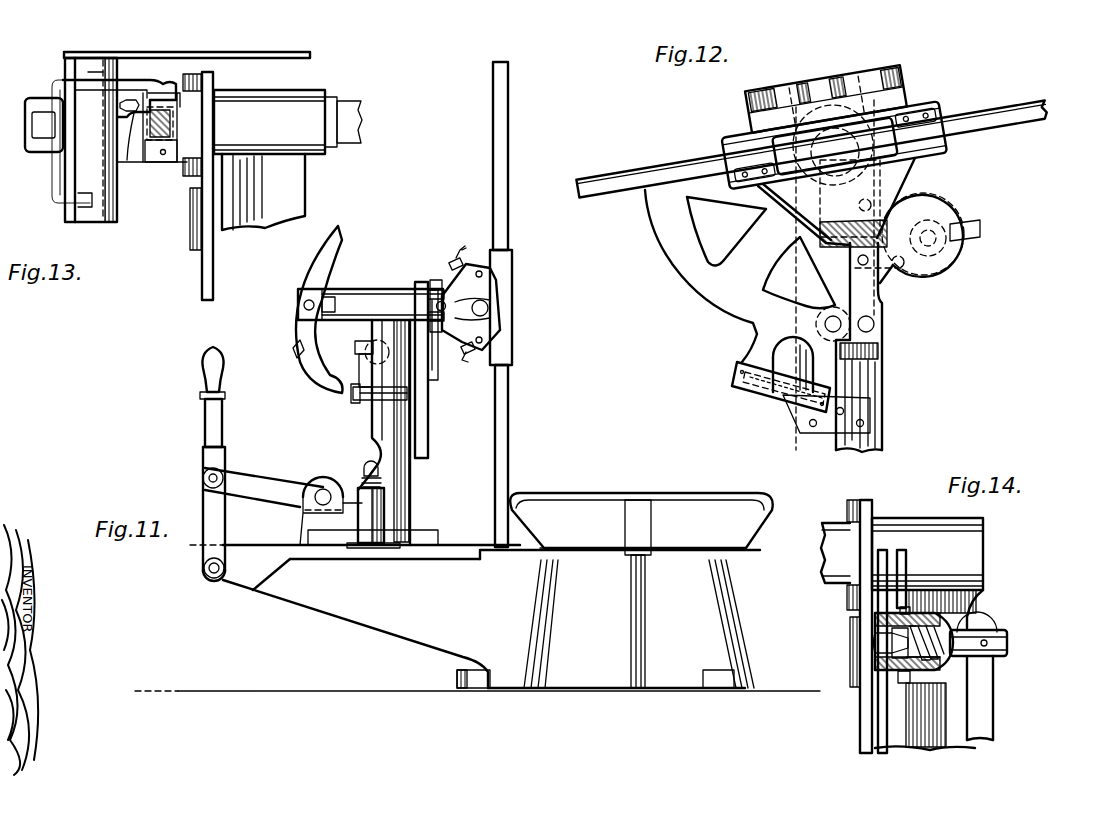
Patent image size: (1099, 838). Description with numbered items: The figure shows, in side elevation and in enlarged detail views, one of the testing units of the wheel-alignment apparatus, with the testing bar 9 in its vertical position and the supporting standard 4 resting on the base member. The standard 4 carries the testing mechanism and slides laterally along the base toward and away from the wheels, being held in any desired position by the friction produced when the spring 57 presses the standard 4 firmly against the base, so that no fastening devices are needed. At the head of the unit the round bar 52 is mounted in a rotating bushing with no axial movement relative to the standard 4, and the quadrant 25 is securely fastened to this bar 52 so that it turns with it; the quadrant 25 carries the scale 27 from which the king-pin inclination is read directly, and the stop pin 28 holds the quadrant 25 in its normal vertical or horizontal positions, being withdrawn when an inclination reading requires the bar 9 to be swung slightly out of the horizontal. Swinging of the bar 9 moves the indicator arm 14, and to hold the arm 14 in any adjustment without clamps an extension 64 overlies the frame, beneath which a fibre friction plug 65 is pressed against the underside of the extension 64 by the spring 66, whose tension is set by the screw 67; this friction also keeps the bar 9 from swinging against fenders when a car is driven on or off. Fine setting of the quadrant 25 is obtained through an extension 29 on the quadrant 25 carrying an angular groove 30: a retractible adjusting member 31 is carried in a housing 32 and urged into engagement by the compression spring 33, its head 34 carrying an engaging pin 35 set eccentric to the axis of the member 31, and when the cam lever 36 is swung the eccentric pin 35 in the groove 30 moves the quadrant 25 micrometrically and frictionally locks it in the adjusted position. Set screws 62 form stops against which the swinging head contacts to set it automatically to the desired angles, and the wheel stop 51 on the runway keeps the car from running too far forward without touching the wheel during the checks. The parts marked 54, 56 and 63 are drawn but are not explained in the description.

In FIG. 13, the standard 4 is at (294, 203).
In FIG. 11, the standard 4 is at (396, 410).
In FIG. 12, the standard 4 is at (858, 378).
In FIG. 14, the standard 4 is at (940, 742).
In FIG. 13, the vertical bar 9 is at (45, 124).
In FIG. 11, the vertical bar 9 is at (500, 203).
In FIG. 12, the vertical bar 9 is at (612, 175).
In FIG. 11, the indicator arm 14 is at (347, 289).
In FIG. 12, the indicator arm 14 is at (856, 72).
In FIG. 13, the quadrant 25 is at (205, 274).
In FIG. 11, the quadrant 25 is at (428, 408).
In FIG. 12, the quadrant 25 is at (722, 270).
In FIG. 14, the quadrant 25 is at (864, 716).
In FIG. 12, the scale 27 is at (748, 387).
In FIG. 11, the stop pin 28 is at (352, 393).
In FIG. 13, the extension 29 is at (202, 220).
In FIG. 12, the extension 29 is at (935, 214).
In FIG. 14, the extension 29 is at (858, 657).
In FIG. 12, the angular groove 30 is at (905, 258).
In FIG. 14, the retractible adjusting member 31 is at (972, 636).
In FIG. 14, the housing 32 is at (925, 613).
In FIG. 14, the compression spring 33 is at (938, 616).
In FIG. 14, the head 34 is at (925, 672).
In FIG. 12, the engaging pin 35 is at (940, 252).
In FIG. 14, the engaging pin 35 is at (880, 645).
In FIG. 11, the cam lever 36 is at (357, 362).
In FIG. 12, the cam lever 36 is at (981, 230).
In FIG. 14, the cam lever 36 is at (985, 716).
In FIG. 11, the wheel stop 51 is at (675, 512).
In FIG. 11, the bar 52 is at (330, 312).
In FIG. 12, the pivot pin 54 is at (872, 325).
In FIG. 11, the operating lever 56 is at (203, 448).
In FIG. 11, the spring 57 is at (362, 476).
In FIG. 13, the set screws 62 is at (127, 160).
In FIG. 11, the set screws 62 is at (457, 258).
In FIG. 11, the bracket plate 63 is at (436, 290).
In FIG. 13, the extension 64 is at (157, 80).
In FIG. 11, the extension 64 is at (486, 316).
In FIG. 12, the extension 64 is at (898, 104).
In FIG. 13, the friction plug 65 is at (167, 104).
In FIG. 11, the friction plug 65 is at (447, 303).
In FIG. 13, the spring 66 is at (165, 118).
In FIG. 13, the screw 67 is at (157, 163).